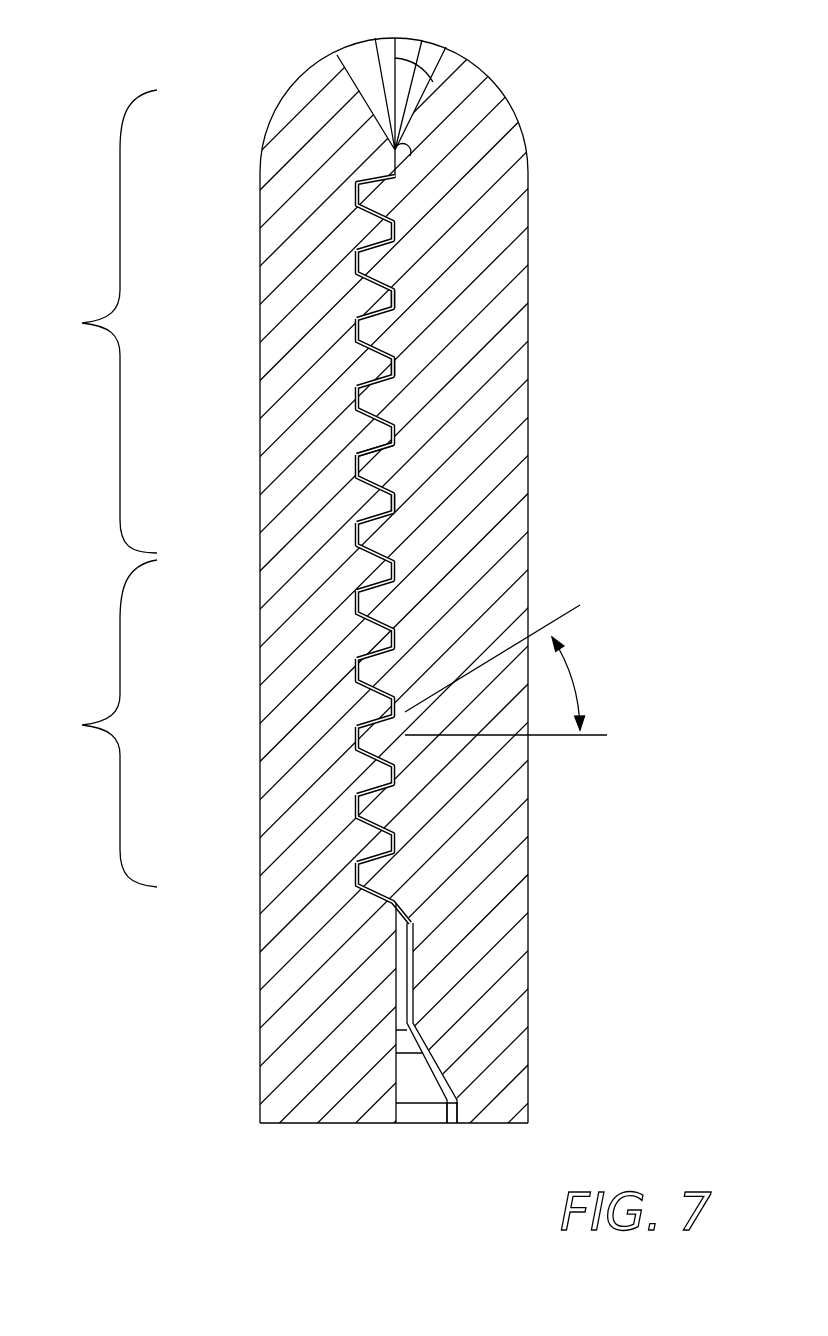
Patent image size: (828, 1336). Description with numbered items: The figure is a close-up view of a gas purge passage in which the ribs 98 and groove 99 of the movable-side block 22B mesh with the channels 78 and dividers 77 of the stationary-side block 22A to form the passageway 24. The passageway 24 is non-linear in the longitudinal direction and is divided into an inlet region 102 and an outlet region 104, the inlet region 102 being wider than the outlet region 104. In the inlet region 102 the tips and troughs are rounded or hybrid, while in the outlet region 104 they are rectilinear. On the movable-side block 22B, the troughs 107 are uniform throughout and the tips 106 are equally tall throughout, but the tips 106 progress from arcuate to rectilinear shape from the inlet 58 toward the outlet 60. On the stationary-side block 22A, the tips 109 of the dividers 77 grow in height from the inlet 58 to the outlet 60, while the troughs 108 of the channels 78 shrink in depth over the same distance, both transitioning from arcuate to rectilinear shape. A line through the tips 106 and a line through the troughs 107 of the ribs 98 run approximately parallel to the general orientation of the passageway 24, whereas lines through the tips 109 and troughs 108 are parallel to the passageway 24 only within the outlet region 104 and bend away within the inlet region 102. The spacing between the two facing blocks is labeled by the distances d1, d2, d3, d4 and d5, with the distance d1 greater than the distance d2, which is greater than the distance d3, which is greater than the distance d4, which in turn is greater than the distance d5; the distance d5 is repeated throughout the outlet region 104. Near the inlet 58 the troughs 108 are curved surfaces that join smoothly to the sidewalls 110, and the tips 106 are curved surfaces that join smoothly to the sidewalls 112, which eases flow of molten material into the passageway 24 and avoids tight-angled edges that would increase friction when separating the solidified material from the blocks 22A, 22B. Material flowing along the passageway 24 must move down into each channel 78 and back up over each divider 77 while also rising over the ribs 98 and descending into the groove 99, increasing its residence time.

The stationary-side block 22A is at (268, 142).
The movable-side block 22B is at (513, 148).
The outlet 60 is at (408, 50).
The inlet 58 is at (418, 1102).
The passageway 24 is at (415, 957).
The dividers 77 is at (376, 236).
The ribs 98 is at (387, 264).
The groove 99 is at (411, 298).
The tips 106 is at (362, 388).
The troughs 107 is at (395, 360).
The sidewalls 110 is at (363, 487).
The tips 109 is at (363, 507).
The troughs 108 is at (362, 458).
The sidewalls 112 is at (364, 482).
The channels 78 is at (336, 553).
The outlet region 104 is at (97, 321).
The inlet region 102 is at (97, 723).
The distance d5 is at (360, 606).
The distance d4 is at (357, 673).
The distance d3 is at (357, 740).
The distance d2 is at (357, 810).
The distance d1 is at (357, 880).